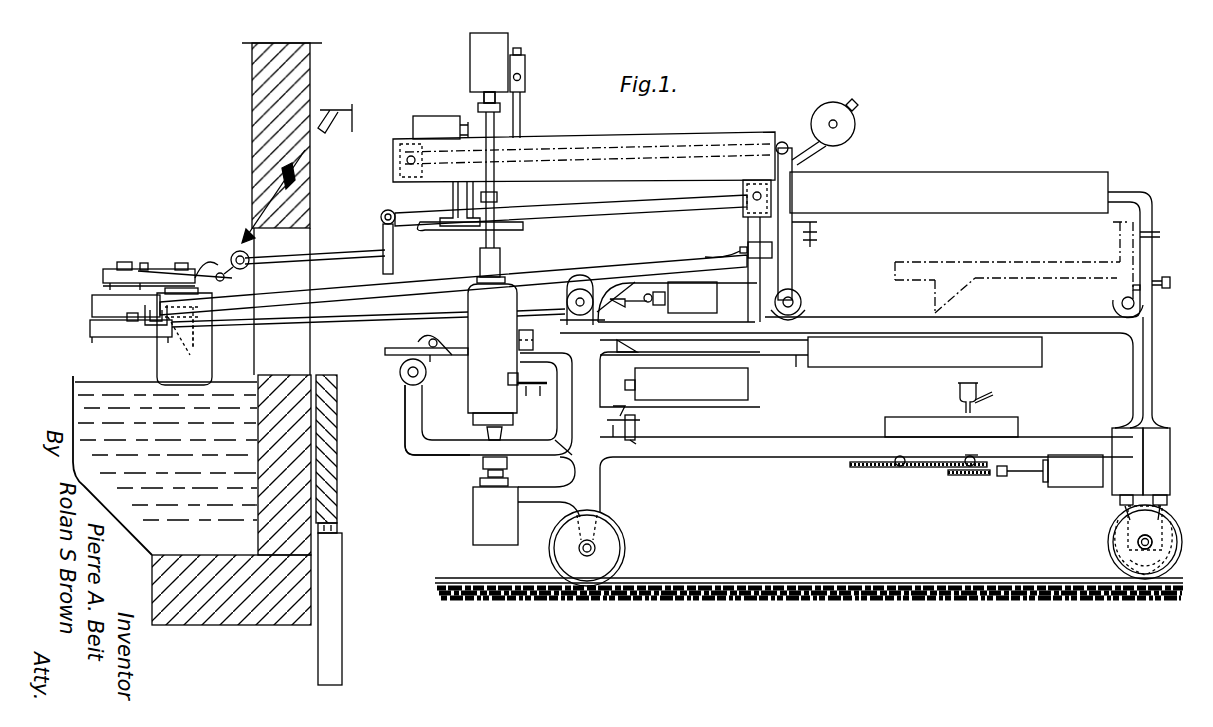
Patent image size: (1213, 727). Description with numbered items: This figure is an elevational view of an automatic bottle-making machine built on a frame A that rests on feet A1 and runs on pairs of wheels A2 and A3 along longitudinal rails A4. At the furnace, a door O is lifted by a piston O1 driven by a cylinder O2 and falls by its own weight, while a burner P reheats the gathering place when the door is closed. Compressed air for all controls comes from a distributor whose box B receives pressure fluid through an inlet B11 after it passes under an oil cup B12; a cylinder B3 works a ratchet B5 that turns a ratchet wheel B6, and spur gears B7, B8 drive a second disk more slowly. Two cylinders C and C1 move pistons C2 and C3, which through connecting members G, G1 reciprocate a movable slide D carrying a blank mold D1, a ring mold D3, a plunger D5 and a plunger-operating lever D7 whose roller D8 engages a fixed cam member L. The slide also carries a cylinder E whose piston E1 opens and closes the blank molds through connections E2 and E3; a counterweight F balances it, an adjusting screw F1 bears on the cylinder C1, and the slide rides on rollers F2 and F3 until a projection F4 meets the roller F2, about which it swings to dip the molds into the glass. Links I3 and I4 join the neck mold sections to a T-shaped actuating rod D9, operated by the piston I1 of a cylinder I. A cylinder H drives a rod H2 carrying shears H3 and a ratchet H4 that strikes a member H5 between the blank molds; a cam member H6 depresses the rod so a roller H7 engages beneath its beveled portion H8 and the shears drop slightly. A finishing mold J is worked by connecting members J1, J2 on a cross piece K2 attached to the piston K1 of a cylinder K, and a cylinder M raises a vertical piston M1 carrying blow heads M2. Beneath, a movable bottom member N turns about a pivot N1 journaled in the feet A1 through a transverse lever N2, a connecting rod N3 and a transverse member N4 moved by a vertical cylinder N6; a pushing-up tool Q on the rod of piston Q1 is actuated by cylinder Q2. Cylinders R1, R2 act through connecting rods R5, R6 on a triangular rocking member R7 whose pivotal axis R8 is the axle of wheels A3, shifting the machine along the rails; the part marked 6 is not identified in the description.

The burner P is at (340, 108).
The control box 6 is at (412, 126).
The cylinder M is at (497, 140).
The vertical piston M1 is at (482, 96).
The blow head M2 is at (500, 268).
The cylinder C is at (618, 140).
The cylinder C1 is at (949, 180).
The piston C2 is at (399, 162).
The piston C3 is at (745, 211).
The counterweight F is at (855, 128).
The adjusting screw F1 is at (818, 240).
The roller F2 is at (582, 310).
The roller F3 is at (803, 303).
The projection F4 is at (617, 297).
The connecting member G is at (393, 242).
The connecting member G1 is at (793, 200).
The fixed cam member L is at (452, 231).
The movable slide D is at (288, 291).
The blank mold D1 is at (184, 336).
The ring mold D3 is at (204, 265).
The plunger D5 is at (177, 264).
The plunger-operating lever D7 is at (236, 281).
The roller D8 is at (249, 255).
The T-shaped actuating rod D9 is at (352, 250).
The cylinder I is at (772, 250).
The piston I1 is at (712, 251).
The link I3 is at (124, 262).
The link I4 is at (146, 264).
The cylinder E is at (692, 297).
The piston E1 is at (656, 306).
The connection E2 is at (116, 338).
The connection E3 is at (146, 326).
The cylinder H is at (821, 352).
The rod H2 is at (796, 358).
The shears H3 is at (401, 373).
The ratchet H4 is at (436, 334).
The member H5 is at (212, 338).
The cam member H6 is at (640, 342).
The roller H7 is at (408, 388).
The beveled portion H8 is at (440, 362).
The finishing mold J is at (500, 348).
The connecting member J1 is at (520, 395).
The connecting member J2 is at (536, 396).
The cylinder K is at (691, 384).
The piston K1 is at (625, 384).
The cross piece K2 is at (548, 378).
The movable bottom member N is at (476, 414).
The stationary longitudinal pivot N1 is at (551, 446).
The transverse lever N2 is at (645, 417).
The connecting rod N3 is at (624, 435).
The transverse member N4 is at (633, 441).
The vertical cylinder N6 is at (610, 405).
The pushing-up tool Q is at (501, 432).
The piston Q1 is at (515, 473).
The cylinder Q2 is at (526, 501).
The frame A is at (848, 333).
The feet A1 is at (600, 497).
The wheels A2 is at (614, 548).
The wheels A3 is at (1110, 536).
The longitudinal rails A4 is at (725, 578).
The box B is at (951, 428).
The cylinder B3 is at (1073, 471).
The ratchet B5 is at (1000, 478).
The ratchet wheel B6 is at (963, 477).
The spur gear B7 is at (978, 462).
The spur gear B8 is at (898, 468).
The inlet B11 is at (993, 395).
The oil cup B12 is at (958, 393).
The cylinder R1 is at (1127, 466).
The cylinder R2 is at (1156, 466).
The connecting rod R5 is at (1122, 520).
The connecting rod R6 is at (1172, 509).
The rocking member R7 is at (1133, 561).
The pivotal axis R8 is at (1138, 548).
The door O is at (326, 458).
The piston O1 is at (337, 527).
The cylinder O2 is at (340, 584).